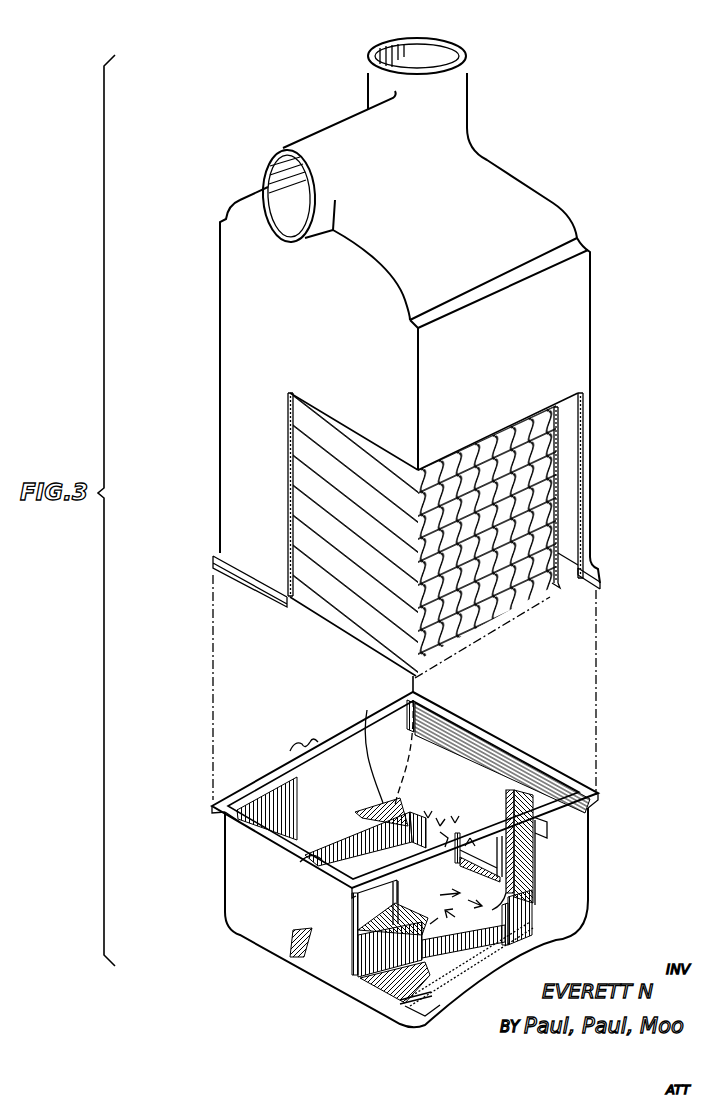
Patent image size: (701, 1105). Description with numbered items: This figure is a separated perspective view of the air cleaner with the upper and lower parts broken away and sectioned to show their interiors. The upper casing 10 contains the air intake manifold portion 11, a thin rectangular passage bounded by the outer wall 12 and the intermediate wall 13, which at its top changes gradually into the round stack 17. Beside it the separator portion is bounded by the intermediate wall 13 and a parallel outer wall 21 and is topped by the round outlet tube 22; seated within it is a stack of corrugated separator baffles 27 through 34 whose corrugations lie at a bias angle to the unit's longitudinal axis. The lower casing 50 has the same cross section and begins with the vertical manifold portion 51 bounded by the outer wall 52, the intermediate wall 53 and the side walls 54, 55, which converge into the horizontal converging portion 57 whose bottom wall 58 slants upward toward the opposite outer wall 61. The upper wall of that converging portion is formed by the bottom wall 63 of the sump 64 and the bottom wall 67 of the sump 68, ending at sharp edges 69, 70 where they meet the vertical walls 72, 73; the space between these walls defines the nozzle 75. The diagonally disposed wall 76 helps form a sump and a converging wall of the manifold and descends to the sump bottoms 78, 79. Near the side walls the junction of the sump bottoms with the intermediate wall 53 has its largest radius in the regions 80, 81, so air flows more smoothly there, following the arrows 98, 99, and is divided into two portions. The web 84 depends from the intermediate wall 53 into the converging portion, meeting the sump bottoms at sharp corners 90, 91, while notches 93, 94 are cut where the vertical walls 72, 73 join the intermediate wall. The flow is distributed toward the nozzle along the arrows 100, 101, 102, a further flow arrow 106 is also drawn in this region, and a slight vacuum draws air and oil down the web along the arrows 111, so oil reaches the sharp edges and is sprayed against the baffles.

The upper casing 10 is at (602, 343).
The air intake manifold portion 11 is at (577, 474).
The outer wall 12 is at (593, 490).
The intermediate wall 13 is at (563, 443).
The round stack 17 is at (448, 43).
The outer wall 21 is at (288, 496).
The outlet tube 22 is at (278, 148).
The separator baffle 27 is at (347, 583).
The separator baffle 34 is at (553, 530).
The lower casing 50 is at (605, 859).
The vertical manifold portion 51 is at (512, 738).
The outer wall 52 is at (527, 757).
The intermediate wall 53 is at (490, 743).
The side wall 54 is at (352, 747).
The side wall 55 is at (555, 878).
The horizontal converging portion 57 is at (510, 930).
The bottom wall 58 is at (467, 940).
The outer wall 61 is at (240, 872).
The bottom wall of sump 63 is at (480, 860).
The sump 64 is at (433, 986).
The bottom wall of sump 67 is at (382, 805).
The sump 68 is at (284, 804).
The sharp edge 69 is at (427, 902).
The sharp edge 70 is at (409, 846).
The vertical wall 72 is at (352, 923).
The vertical wall 73 is at (352, 890).
The nozzle 75 is at (370, 878).
The diagonally disposed wall 76 is at (377, 962).
The sump bottom 78 is at (408, 1000).
The sump bottom 79 is at (310, 862).
The region of maximum curvature 80 is at (540, 900).
The region of maximum curvature 81 is at (373, 723).
The web 84 is at (439, 887).
The sharp corner 90 is at (492, 874).
The sharp corner 91 is at (438, 846).
The notch 93 is at (470, 838).
The notch 94 is at (440, 826).
The air flow arrow 98 is at (520, 797).
The air flow arrow 99 is at (430, 727).
The air flow arrow 100 is at (486, 908).
The air flow arrow 101 is at (463, 920).
The air flow arrow 102 is at (443, 929).
The flow arrow 106 is at (428, 818).
The arrow 111 is at (455, 823).